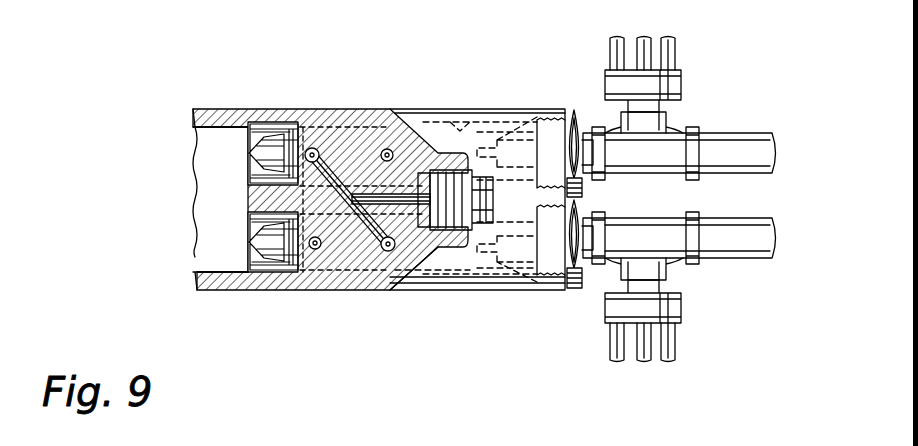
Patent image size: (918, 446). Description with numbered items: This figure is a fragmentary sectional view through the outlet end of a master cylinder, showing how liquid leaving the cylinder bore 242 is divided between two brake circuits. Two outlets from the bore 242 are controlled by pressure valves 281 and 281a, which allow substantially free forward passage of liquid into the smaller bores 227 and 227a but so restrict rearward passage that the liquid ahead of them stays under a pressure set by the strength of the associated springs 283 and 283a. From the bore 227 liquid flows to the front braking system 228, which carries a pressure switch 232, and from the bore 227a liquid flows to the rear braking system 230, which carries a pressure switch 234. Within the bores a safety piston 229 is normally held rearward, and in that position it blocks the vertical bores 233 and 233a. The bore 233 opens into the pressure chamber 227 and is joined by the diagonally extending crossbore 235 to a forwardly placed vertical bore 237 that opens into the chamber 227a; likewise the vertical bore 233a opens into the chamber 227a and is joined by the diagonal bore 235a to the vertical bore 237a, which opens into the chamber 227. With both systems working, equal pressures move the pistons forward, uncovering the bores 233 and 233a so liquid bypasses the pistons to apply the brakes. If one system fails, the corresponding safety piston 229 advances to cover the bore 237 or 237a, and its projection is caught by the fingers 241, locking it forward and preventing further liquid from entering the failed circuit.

The bore 227 is at (470, 293).
The bore 227a is at (469, 129).
The front braking system 228 is at (743, 247).
The safety piston 229 is at (372, 145).
The rear braking system 230 is at (753, 105).
The pressure switch 232 is at (683, 325).
The vertical bore 233 is at (310, 250).
The vertical bore 233a is at (314, 148).
The pressure switch 234 is at (677, 76).
The diagonally extending crossbore 235 is at (388, 148).
The diagonal horizontal bore 235a is at (389, 252).
The vertical bore 237 is at (405, 128).
The vertical bore 237a is at (406, 288).
The fingers 241 is at (535, 120).
The cylinder bore 242 is at (213, 198).
The pressure valve 281 is at (222, 244).
The pressure valve 281a is at (196, 158).
The spring 283 is at (272, 268).
The spring 283a is at (284, 122).